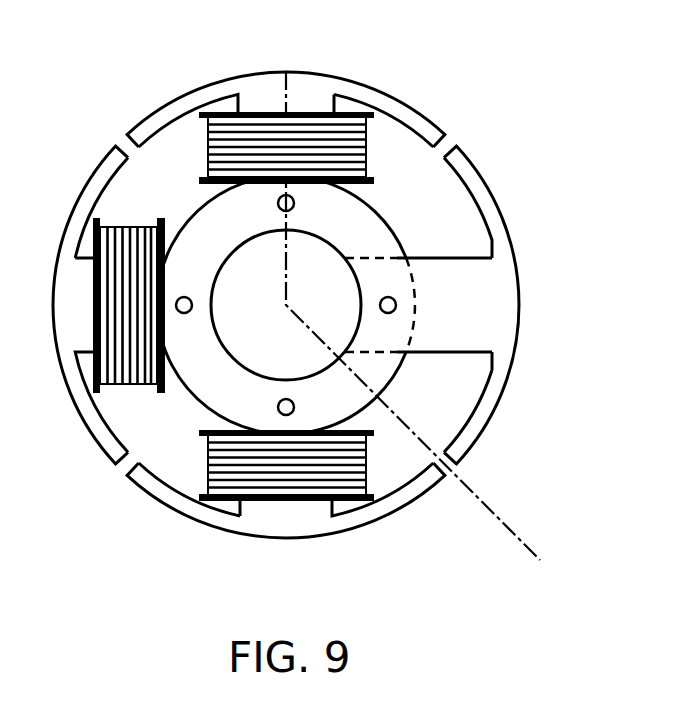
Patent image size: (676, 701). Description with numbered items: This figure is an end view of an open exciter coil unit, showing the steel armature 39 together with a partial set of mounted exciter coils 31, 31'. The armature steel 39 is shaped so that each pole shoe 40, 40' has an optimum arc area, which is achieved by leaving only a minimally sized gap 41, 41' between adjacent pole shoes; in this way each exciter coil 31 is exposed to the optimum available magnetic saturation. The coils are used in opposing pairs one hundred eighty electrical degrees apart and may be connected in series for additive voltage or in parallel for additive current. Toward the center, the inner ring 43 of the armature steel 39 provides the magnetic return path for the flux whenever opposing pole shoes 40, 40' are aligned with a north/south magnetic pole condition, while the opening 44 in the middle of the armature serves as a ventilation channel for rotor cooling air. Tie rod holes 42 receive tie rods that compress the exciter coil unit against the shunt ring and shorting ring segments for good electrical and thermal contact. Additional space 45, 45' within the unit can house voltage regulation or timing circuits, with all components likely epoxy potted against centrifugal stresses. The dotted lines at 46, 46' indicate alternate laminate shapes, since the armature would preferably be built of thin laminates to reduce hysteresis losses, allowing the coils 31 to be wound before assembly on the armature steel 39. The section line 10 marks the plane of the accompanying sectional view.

The section line 10 is at (286, 27).
The exciter coil 31 is at (264, 148).
The exciter coil 31' is at (255, 347).
The armature steel 39 is at (485, 309).
The pole shoe 40 is at (286, 103).
The pole shoe 40' is at (500, 305).
The gap 41 is at (88, 293).
The gap 41' is at (278, 321).
The tie rod hole 42 is at (186, 297).
The inner ring 43 is at (247, 221).
The opening 44 is at (262, 377).
The additional space 45 is at (419, 210).
The additional space 45' is at (152, 437).
The dotted lines indicating alternate laminate shapes 46 is at (367, 288).
The dotted lines indicating alternate laminate shapes 46' is at (436, 306).